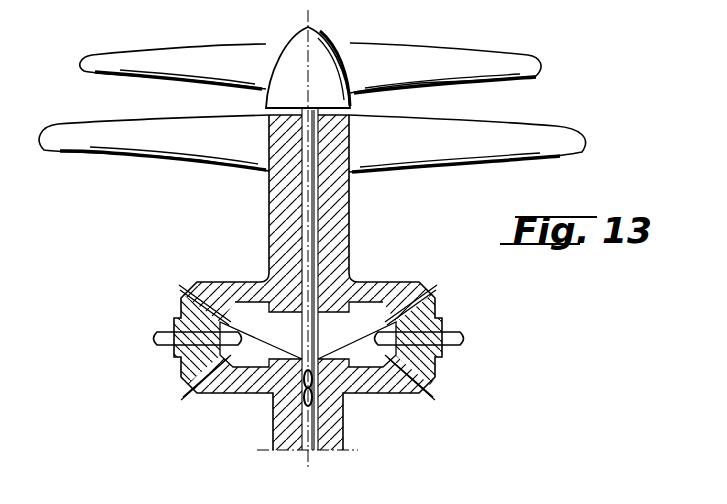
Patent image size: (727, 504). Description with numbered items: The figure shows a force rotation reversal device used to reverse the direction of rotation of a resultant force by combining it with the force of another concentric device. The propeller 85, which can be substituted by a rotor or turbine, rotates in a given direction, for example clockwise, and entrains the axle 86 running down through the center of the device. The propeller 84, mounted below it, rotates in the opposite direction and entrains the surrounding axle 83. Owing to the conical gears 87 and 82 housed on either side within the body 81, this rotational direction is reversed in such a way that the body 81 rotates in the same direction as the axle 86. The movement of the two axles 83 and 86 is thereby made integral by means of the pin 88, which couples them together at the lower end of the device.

The body 81 is at (243, 385).
The conical gear 82 is at (181, 307).
The axle 83 is at (280, 220).
The propeller 84 is at (98, 125).
The propeller 85 is at (93, 58).
The axle 86 is at (308, 202).
The conical gear 87 is at (436, 313).
The pin 88 is at (312, 393).